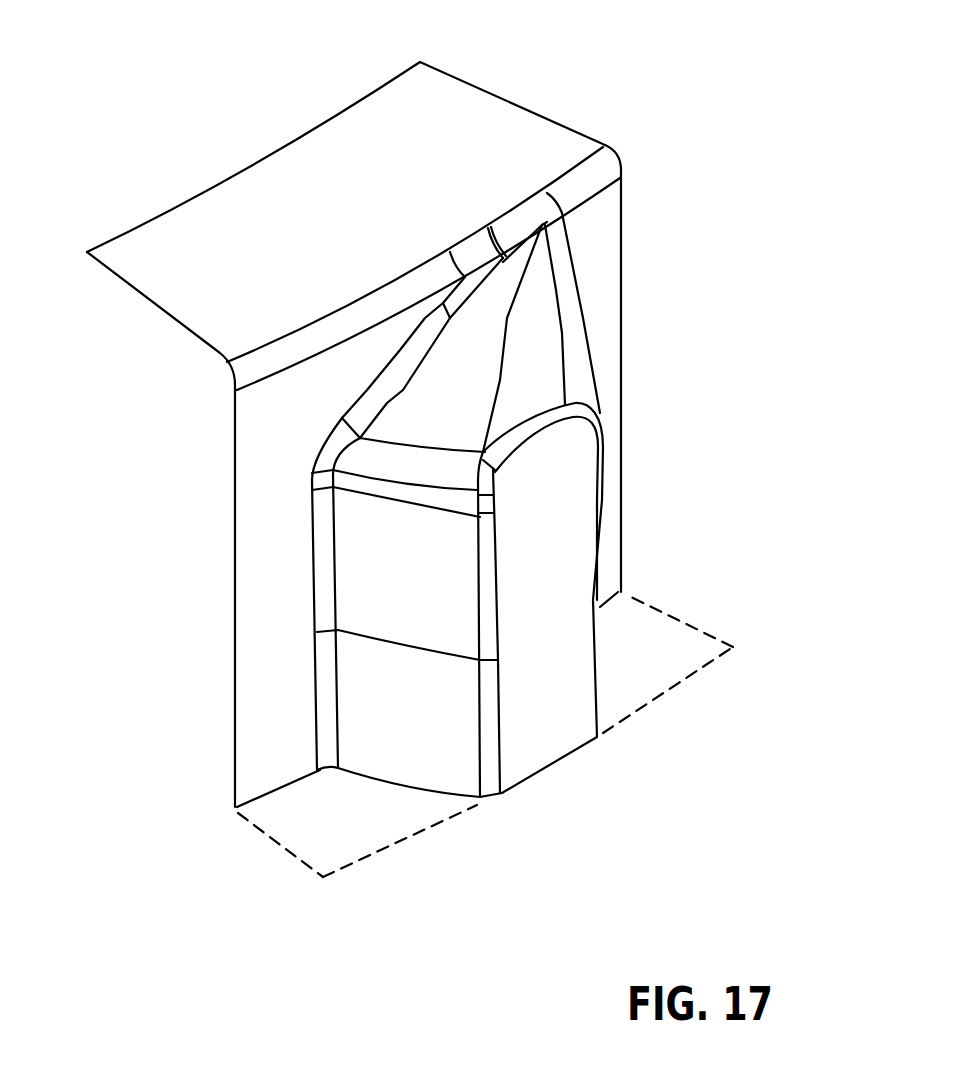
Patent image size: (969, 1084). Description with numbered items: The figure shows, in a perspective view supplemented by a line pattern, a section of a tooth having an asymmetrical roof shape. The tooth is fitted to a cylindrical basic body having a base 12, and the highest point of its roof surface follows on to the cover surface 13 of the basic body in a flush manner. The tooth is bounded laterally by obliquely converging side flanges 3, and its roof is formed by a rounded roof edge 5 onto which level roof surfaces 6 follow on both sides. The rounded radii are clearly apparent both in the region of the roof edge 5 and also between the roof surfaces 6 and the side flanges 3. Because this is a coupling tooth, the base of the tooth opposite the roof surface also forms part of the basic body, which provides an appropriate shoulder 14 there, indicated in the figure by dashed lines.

The side flanges 3 is at (405, 588).
The roof edge 5 is at (562, 335).
The roof surfaces 6 is at (455, 380).
The base 12 is at (598, 260).
The cover surface 13 is at (388, 192).
The shoulder 14 is at (640, 648).